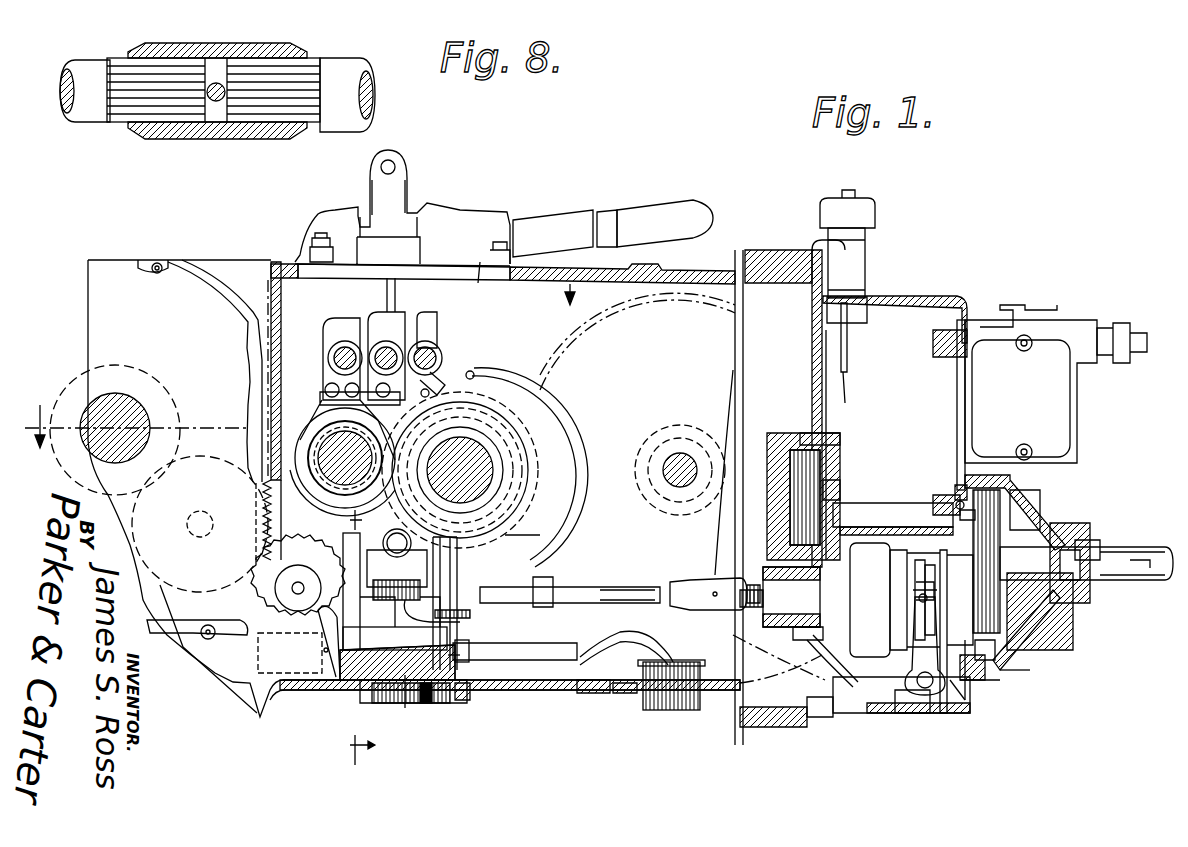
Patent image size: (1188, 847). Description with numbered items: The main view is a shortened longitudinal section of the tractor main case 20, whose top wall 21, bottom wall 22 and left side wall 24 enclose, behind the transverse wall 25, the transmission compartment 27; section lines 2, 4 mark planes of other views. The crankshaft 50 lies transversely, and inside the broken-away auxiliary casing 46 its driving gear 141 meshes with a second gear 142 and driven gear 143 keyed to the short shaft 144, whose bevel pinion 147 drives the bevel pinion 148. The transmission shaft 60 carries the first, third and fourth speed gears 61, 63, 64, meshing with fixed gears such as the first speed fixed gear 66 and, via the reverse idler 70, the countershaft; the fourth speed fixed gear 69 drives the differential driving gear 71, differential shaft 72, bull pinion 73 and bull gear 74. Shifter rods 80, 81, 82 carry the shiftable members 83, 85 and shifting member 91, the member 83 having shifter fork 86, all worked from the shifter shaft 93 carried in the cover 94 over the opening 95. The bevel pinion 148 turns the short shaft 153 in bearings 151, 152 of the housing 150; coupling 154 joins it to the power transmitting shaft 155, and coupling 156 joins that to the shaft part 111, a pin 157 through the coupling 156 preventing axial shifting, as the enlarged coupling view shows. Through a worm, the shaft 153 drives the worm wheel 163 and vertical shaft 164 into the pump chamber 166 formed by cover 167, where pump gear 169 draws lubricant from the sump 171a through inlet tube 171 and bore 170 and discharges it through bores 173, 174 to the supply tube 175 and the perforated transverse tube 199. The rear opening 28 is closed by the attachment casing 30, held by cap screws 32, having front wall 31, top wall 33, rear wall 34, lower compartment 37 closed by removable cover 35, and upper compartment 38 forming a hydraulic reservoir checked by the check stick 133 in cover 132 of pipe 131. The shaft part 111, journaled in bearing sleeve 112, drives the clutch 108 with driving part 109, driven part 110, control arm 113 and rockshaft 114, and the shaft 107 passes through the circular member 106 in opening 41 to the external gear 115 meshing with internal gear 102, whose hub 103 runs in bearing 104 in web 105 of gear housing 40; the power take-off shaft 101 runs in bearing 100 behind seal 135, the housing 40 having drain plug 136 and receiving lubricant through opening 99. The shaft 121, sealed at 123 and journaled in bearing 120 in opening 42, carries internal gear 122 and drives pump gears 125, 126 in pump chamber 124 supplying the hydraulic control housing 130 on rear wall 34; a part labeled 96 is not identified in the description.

In FIG. 8, the power transmitting shaft part 155 is at (100, 75).
In FIG. 1, the power transmitting shaft part 155 is at (650, 603).
In FIG. 8, the pin 157 is at (216, 84).
In FIG. 1, the pin 157 is at (712, 590).
In FIG. 8, the sleeve connector or coupling 156 is at (268, 46).
In FIG. 1, the sleeve connector or coupling 156 is at (735, 605).
In FIG. 8, the shaft part 111 is at (373, 103).
In FIG. 1, the shaft part 111 is at (770, 615).
In FIG. 1, the main case 20 is at (603, 695).
In FIG. 1, the top wall 21 is at (645, 265).
In FIG. 1, the bottom wall 22 is at (595, 693).
In FIG. 1, the transverse vertical wall 25 is at (290, 262).
In FIG. 1, the change-speed transmission compartment 27 is at (462, 300).
In FIG. 1, the shifter shaft 93 is at (705, 212).
In FIG. 1, the cover 94 is at (427, 215).
In FIG. 1, the opening 95 is at (480, 285).
In FIG. 1, the driving gear 141 is at (95, 362).
In FIG. 1, the crankshaft 50 is at (90, 448).
In FIG. 1, the section line 2 is at (304, 366).
In FIG. 1, the section line 4 is at (357, 635).
In FIG. 1, the second gear 142 is at (200, 534).
In FIG. 1, the second auxiliary casing 46 is at (200, 625).
In FIG. 1, the driven gear 143 is at (245, 660).
In FIG. 1, the third speed gear 63 is at (258, 478).
In FIG. 1, the fourth speed gear 64 is at (262, 497).
In FIG. 1, the short transverse shaft 144 is at (298, 603).
In FIG. 1, the bevel pinion 147 is at (270, 690).
In FIG. 1, the second bevel pinion 148 is at (335, 688).
In FIG. 1, the left side wall 24 is at (325, 691).
In FIG. 1, the first speed gear 61 is at (322, 452).
In FIG. 1, the shifter fork 86 is at (310, 440).
In FIG. 1, the transmission shaft 60 is at (340, 430).
In FIG. 1, the first speed fixed gear 66 is at (540, 463).
In FIG. 1, the lubricant supply tube 175 is at (540, 522).
In FIG. 1, the shiftable member 83 is at (330, 322).
In FIG. 1, the shifter rod 80 is at (328, 355).
In FIG. 1, the second shifter rod 81 is at (385, 342).
In FIG. 1, the shiftable member 85 is at (395, 315).
In FIG. 1, the shifting member 91 is at (440, 314).
In FIG. 1, the shift rod 82 is at (442, 354).
In FIG. 1, the transverse lubricant supply tube 199 is at (430, 390).
In FIG. 1, the fourth speed fixed gear 69 is at (505, 440).
In FIG. 1, the differential driving gear 71 is at (555, 370).
In FIG. 1, the differential shaft 72 is at (672, 488).
In FIG. 1, the bull pinion 73 is at (645, 494).
In FIG. 1, the bull gear 74 is at (770, 312).
In FIG. 1, the bearing 151 is at (345, 550).
In FIG. 1, the worm wheel 163 is at (395, 623).
In FIG. 1, the horizontal bore 174 is at (397, 575).
In FIG. 1, the reverse idler 70 is at (445, 548).
In FIG. 1, the bearing 152 is at (460, 565).
In FIG. 1, the short shaft 153 is at (472, 614).
In FIG. 1, the housing or supporting structure 150 is at (470, 628).
In FIG. 1, the coupling or connector sleeve 154 is at (530, 587).
In FIG. 1, the inlet tube 171 is at (548, 652).
In FIG. 1, the lubricant sump 171a is at (660, 710).
In FIG. 1, the horizontal bore 170 is at (470, 658).
In FIG. 1, the cover member 167 is at (470, 690).
In FIG. 1, the vertical shaft 164 is at (398, 705).
In FIG. 1, the pump chamber 166 is at (372, 705).
In FIG. 1, the vertical bore 173 is at (420, 706).
In FIG. 1, the second pump gear 169 is at (462, 705).
In FIG. 1, the front wall 31 is at (812, 368).
In FIG. 1, the check stick 133 is at (838, 348).
In FIG. 1, the vertical pipe 131 is at (855, 238).
In FIG. 1, the removable cover 132 is at (860, 208).
In FIG. 1, the top wall 33 is at (888, 293).
In FIG. 1, the secondary or attachment casing structure 30 is at (930, 290).
In FIG. 1, the rear wall 34 is at (972, 330).
In FIG. 1, the upper compartment 38 is at (910, 334).
In FIG. 1, the hydraulic control housing 130 is at (1067, 328).
In FIG. 1, the internal gear 122 is at (985, 495).
In FIG. 1, the pump chamber 124 is at (800, 440).
In FIG. 1, the pump gear 125 is at (820, 450).
In FIG. 1, the pump gear 126 is at (832, 505).
In FIG. 1, the shaft 121 is at (888, 500).
In FIG. 1, the sleeve 96 is at (868, 527).
In FIG. 1, the opening 99 is at (958, 517).
In FIG. 1, the seal 123 is at (940, 498).
In FIG. 1, the anti-friction bearing 120 is at (955, 500).
In FIG. 1, the circular opening 42 is at (960, 485).
In FIG. 1, the internal gear 102 is at (1020, 500).
In FIG. 1, the hub 103 is at (1040, 528).
In FIG. 1, the anti-friction bearing 100 is at (1070, 525).
In FIG. 1, the sealing means 135 is at (1095, 540).
In FIG. 1, the power take-off shaft 101 is at (1140, 547).
In FIG. 1, the clutch 108 is at (882, 590).
In FIG. 1, the driven part 110 is at (910, 612).
In FIG. 1, the control arm 113 is at (920, 638).
In FIG. 1, the rockshaft 114 is at (932, 700).
In FIG. 1, the driving part 109 is at (830, 660).
In FIG. 1, the lower compartment 37 is at (893, 700).
In FIG. 1, the removable bottom wall or cover 35 is at (915, 720).
In FIG. 1, the cap screws 32 is at (845, 720).
In FIG. 1, the rear opening 28 is at (790, 737).
In FIG. 1, the bearing sleeve 112 is at (795, 640).
In FIG. 1, the anti-friction bearing 104 is at (1040, 610).
In FIG. 1, the gear housing 40 is at (1025, 615).
In FIG. 1, the web 105 is at (1030, 625).
In FIG. 1, the external gear 115 is at (995, 648).
In FIG. 1, the circular opening 41 is at (985, 670).
In FIG. 1, the circular member 106 is at (985, 680).
In FIG. 1, the drain plug 136 is at (990, 660).
In FIG. 1, the shaft 107 is at (970, 690).